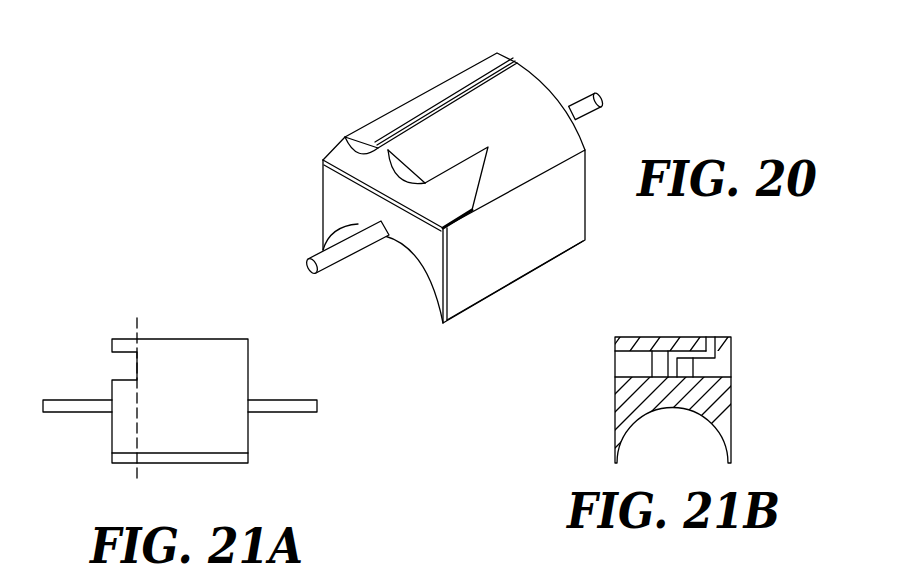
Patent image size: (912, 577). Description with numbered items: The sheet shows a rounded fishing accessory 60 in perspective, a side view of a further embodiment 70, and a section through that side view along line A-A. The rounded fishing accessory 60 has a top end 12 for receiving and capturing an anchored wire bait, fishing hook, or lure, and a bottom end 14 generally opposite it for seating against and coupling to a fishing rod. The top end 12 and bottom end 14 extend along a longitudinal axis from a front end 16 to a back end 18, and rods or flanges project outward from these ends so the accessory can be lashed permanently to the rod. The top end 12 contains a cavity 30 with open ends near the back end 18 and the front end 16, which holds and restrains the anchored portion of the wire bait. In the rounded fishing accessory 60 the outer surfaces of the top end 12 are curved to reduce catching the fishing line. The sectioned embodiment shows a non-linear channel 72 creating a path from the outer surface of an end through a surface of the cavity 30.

In FIG. 20, the rounded fishing accessory 60 is at (262, 105).
In FIG. 20, the top end 12 is at (430, 67).
In FIG. 20, the bottom end 14 is at (500, 304).
In FIG. 20, the front end 16 is at (610, 146).
In FIG. 20, the back end 18 is at (307, 208).
In FIG. 20, the cavity 30 is at (460, 183).
In FIG. 21A, the holder assembly top view 70 is at (79, 345).
In FIG. 21B, the non-linear channel 72 is at (712, 330).